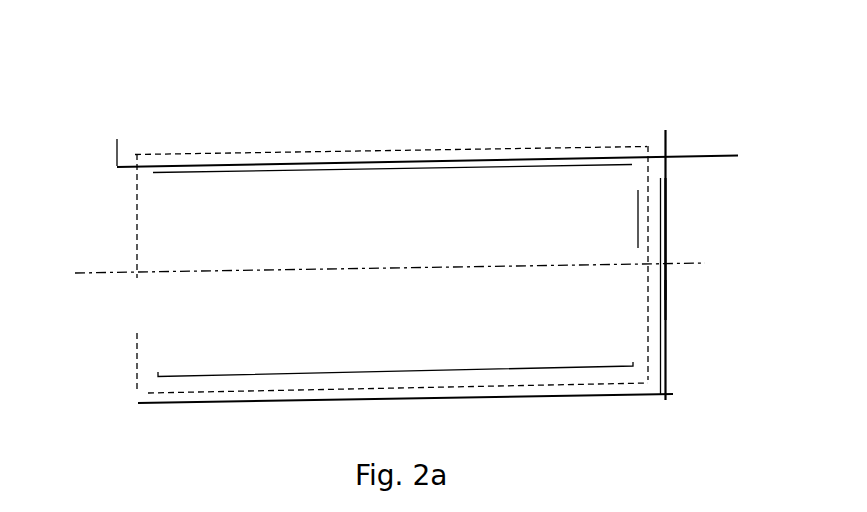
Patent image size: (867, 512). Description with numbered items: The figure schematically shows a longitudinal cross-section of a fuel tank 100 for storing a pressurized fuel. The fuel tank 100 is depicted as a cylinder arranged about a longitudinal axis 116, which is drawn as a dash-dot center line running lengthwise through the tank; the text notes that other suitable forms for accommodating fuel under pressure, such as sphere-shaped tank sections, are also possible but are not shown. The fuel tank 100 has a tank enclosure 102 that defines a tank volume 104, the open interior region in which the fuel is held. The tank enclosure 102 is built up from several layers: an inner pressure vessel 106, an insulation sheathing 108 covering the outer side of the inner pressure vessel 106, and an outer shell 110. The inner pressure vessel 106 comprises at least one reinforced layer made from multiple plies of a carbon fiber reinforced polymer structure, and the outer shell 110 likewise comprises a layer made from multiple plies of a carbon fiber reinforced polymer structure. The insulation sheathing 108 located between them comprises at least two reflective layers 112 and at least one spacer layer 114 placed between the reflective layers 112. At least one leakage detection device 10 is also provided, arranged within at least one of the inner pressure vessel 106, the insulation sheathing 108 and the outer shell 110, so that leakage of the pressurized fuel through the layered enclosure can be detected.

The leakage detection device 10 is at (488, 151).
The fuel tank 100 is at (621, 101).
The tank enclosure 102 is at (671, 146).
The tank volume 104 is at (393, 271).
The inner pressure vessel 106 is at (637, 210).
The insulation sheathing 108 is at (660, 298).
The outer shell 110 is at (667, 238).
The reflective layers 112 is at (661, 326).
The spacer layer 114 is at (650, 360).
The longitudinal axis 116 is at (97, 272).